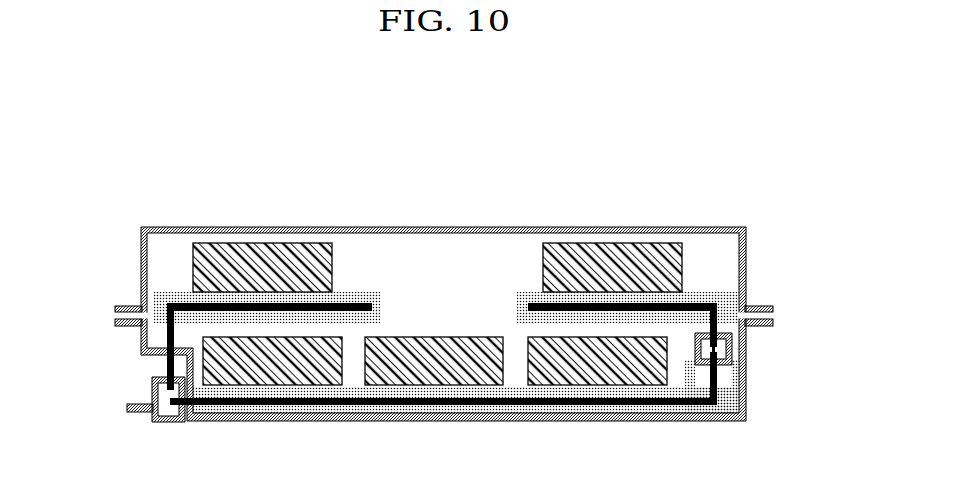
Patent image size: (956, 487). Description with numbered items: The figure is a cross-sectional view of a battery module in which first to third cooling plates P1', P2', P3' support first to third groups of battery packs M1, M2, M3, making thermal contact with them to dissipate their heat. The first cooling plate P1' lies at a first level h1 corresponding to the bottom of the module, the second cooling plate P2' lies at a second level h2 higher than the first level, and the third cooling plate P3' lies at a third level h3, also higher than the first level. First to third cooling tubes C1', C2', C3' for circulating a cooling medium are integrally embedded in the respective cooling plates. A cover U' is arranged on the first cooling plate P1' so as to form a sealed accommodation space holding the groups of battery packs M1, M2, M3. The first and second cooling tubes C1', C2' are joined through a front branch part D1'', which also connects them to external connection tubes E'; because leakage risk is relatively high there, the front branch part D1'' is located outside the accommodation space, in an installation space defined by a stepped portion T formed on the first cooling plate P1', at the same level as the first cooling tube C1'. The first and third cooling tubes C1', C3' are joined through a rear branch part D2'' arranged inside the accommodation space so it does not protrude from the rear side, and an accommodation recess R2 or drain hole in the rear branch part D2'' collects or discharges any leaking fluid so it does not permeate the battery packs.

The cover U' is at (443, 295).
The second cooling tube C2' is at (269, 280).
The second group of battery packs M2 is at (318, 243).
The second cooling plate P2' is at (275, 246).
The first group of battery packs M1 is at (455, 337).
The third group of battery packs M3 is at (586, 243).
The third cooling tube C3' is at (622, 287).
The third cooling plate P3' is at (678, 296).
The third level h3 is at (773, 308).
The rear branch part D2'' is at (761, 349).
The accommodation recess R2 is at (746, 380).
The second level h2 is at (115, 308).
The stepped portion T is at (157, 357).
The first level h1 is at (127, 403).
The external connection tube E' is at (135, 433).
The front branch part D1'' is at (172, 421).
The first cooling plate P1' is at (466, 426).
The first cooling tube C1' is at (443, 432).